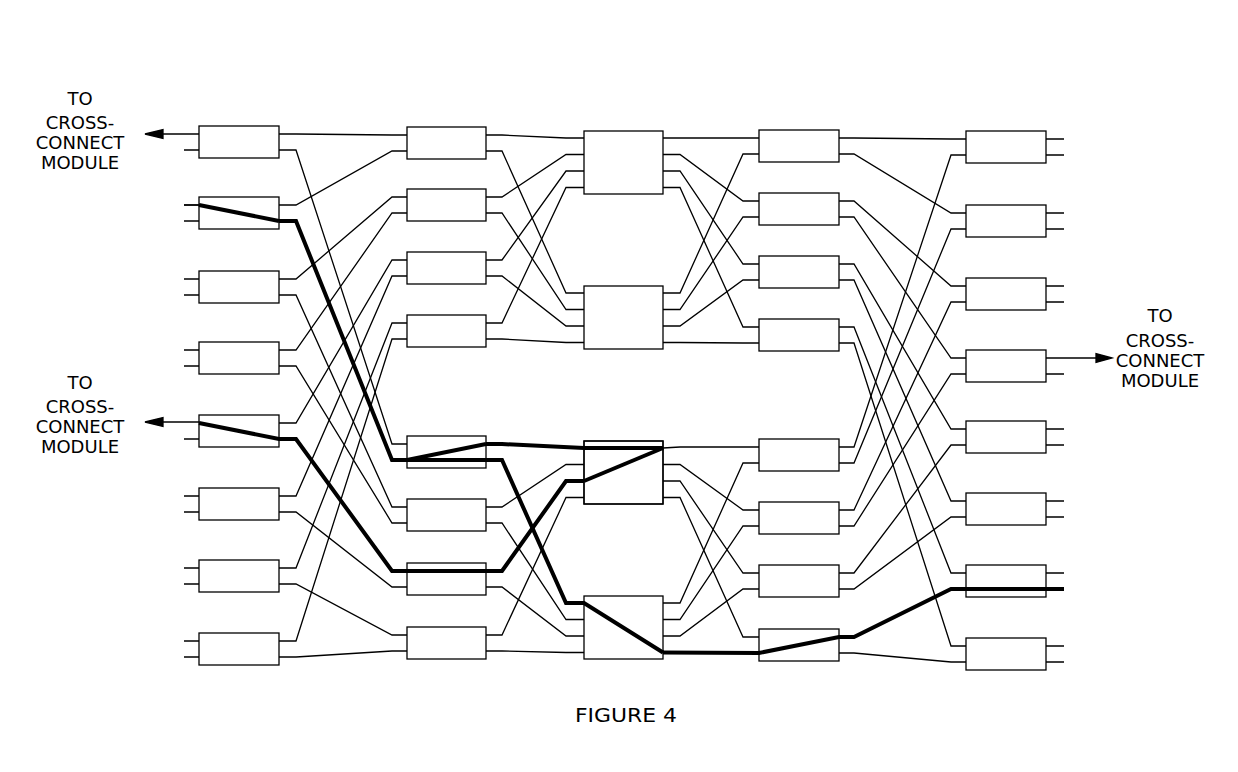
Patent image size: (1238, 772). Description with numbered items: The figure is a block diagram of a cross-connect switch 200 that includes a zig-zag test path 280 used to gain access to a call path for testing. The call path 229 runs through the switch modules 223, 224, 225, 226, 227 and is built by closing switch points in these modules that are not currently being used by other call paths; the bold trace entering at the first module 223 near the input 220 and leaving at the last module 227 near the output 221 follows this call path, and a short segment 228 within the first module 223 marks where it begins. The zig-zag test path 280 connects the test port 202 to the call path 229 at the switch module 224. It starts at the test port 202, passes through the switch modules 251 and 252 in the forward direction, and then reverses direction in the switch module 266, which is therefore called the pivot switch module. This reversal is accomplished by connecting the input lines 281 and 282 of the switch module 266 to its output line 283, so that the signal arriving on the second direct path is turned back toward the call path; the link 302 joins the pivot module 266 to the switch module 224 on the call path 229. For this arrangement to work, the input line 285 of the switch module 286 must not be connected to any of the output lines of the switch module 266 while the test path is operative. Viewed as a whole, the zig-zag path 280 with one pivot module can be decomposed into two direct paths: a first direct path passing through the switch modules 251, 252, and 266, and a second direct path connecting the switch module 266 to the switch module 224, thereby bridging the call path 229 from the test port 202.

The cross-connect switch 200 is at (1150, 93).
The test port 202 is at (168, 410).
The input port 220 is at (166, 205).
The output port 221 is at (1082, 592).
The switch module 223 is at (266, 205).
The switch module 224 is at (452, 438).
The switch module 225 is at (635, 603).
The switch module 226 is at (775, 637).
The switch module 227 is at (1028, 576).
The first stage connection path 228 is at (225, 212).
The call path 229 is at (290, 248).
The switch module 251 is at (255, 425).
The switch module 252 is at (465, 565).
The switch module 266 is at (602, 500).
The zig-zag test path 280 is at (300, 458).
The input line 281 is at (617, 441).
The input line 282 is at (596, 476).
The output line 283 is at (672, 436).
The input line 285 is at (740, 436).
The switch module 286 is at (805, 448).
The second to third stage link 302 is at (543, 443).